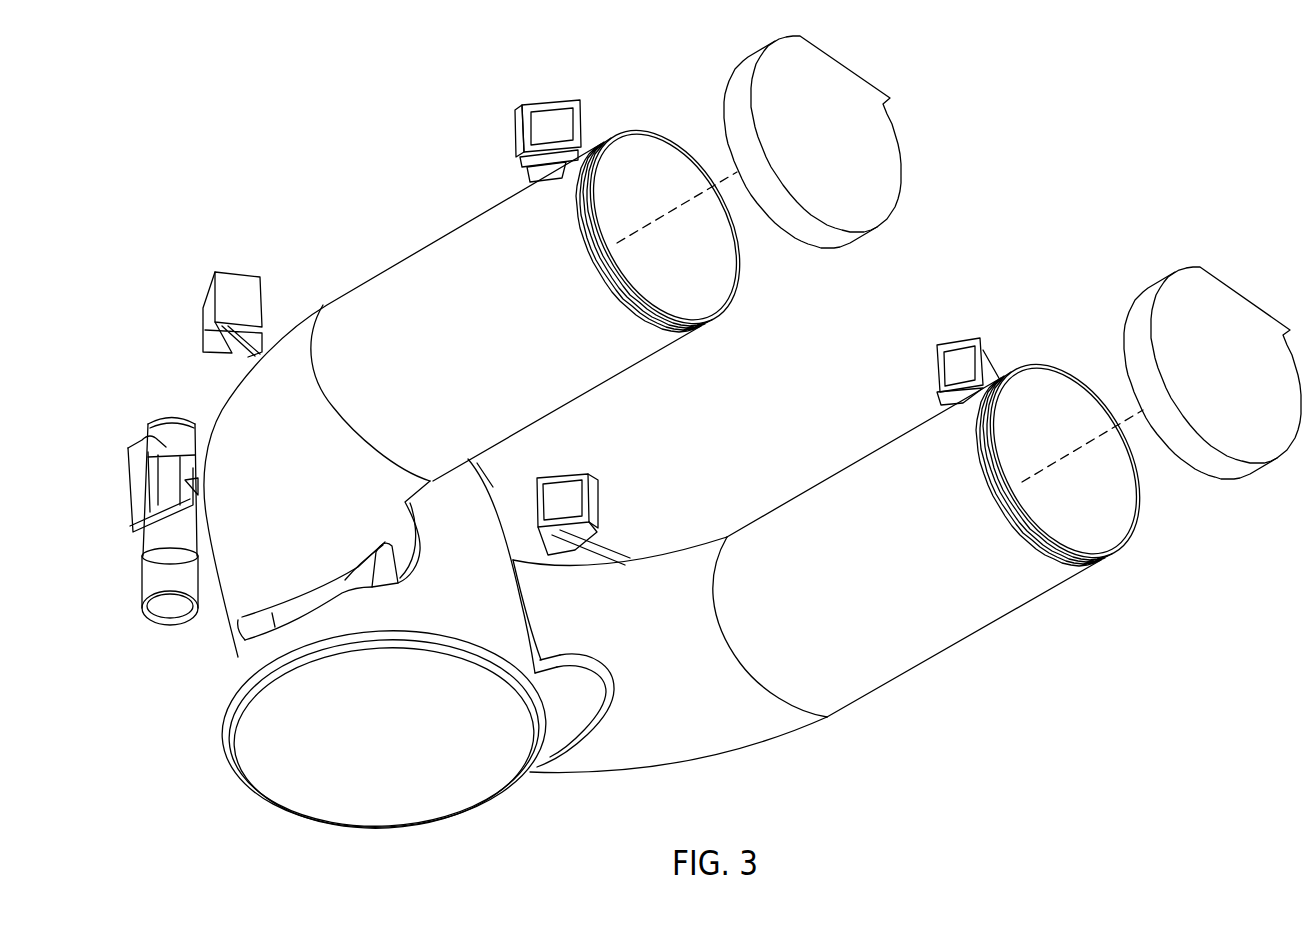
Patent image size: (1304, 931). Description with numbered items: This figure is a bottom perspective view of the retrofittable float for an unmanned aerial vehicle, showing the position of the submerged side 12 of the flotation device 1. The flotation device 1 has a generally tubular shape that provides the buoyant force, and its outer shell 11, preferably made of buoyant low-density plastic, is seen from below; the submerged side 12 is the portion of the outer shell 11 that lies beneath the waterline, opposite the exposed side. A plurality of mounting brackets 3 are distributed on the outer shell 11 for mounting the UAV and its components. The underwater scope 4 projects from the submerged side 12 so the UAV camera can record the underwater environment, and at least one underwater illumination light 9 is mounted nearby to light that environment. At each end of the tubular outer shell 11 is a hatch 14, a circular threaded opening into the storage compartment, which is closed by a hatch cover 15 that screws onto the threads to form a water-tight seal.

The flotation device 1 is at (800, 756).
The mounting bracket 3 is at (517, 147).
The underwater scope 4 is at (242, 668).
The underwater illumination light 9 is at (172, 417).
The outer shell 11 is at (887, 660).
The submerged side 12 is at (361, 502).
The hatch 14 is at (1114, 526).
The hatch cover 15 is at (1230, 473).